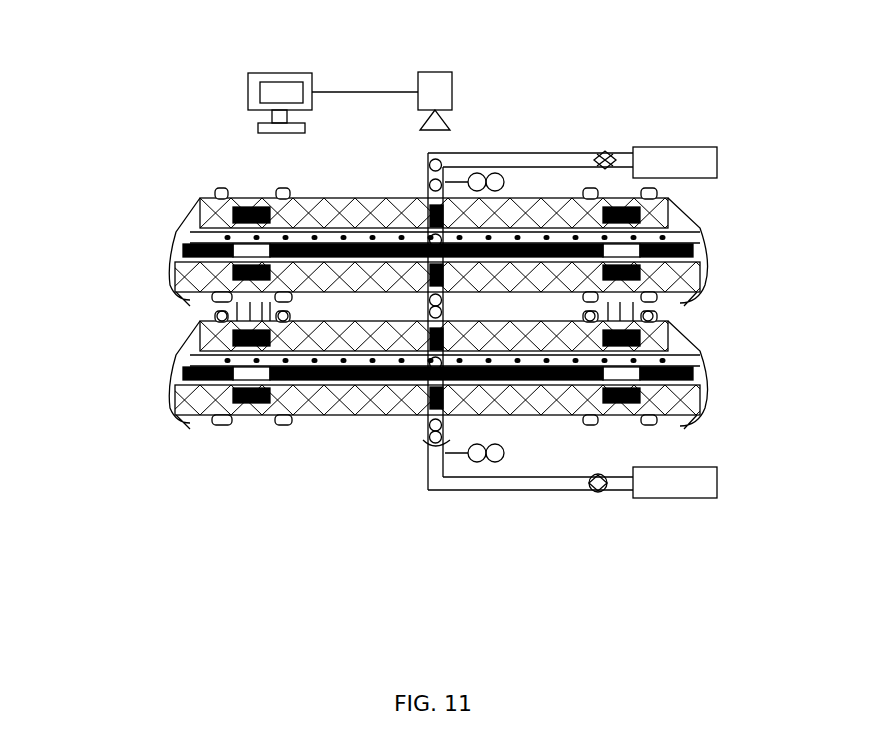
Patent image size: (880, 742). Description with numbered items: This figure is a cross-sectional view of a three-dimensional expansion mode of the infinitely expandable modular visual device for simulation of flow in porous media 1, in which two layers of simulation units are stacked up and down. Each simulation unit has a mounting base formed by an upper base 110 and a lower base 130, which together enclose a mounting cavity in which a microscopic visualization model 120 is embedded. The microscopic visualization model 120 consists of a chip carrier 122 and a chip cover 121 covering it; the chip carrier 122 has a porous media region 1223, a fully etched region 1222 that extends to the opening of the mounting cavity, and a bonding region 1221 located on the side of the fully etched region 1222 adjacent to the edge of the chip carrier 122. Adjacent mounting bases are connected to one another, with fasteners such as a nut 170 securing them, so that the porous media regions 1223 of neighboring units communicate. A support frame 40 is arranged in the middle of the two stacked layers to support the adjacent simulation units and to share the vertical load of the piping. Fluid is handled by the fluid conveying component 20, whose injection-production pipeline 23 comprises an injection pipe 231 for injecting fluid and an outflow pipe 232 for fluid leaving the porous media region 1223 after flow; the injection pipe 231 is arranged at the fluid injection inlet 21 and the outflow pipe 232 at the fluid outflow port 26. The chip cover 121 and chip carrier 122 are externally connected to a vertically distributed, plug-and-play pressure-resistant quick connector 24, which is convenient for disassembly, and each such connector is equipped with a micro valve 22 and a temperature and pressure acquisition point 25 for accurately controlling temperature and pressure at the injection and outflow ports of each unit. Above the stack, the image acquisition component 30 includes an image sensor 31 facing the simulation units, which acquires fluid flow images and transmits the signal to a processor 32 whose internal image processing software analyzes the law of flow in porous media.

The infinitely expandable modular visual device for simulation of flow in porous med 1 is at (328, 427).
The fluid conveying component 20 is at (786, 326).
The fluid injection inlet 21 is at (675, 492).
The micro valve 22 is at (595, 484).
The injection-production pipeline 23 is at (570, 565).
The injection pipe 231 is at (480, 487).
The outflow pipe 232 is at (577, 150).
The pressure-resistant quick connector 24 is at (407, 218).
The temperature and pressure acquisition point 25 is at (500, 190).
The fluid outflow port 26 is at (667, 162).
The image acquisition component 30 is at (503, 47).
The image sensor 31 is at (438, 100).
The processor 32 is at (287, 88).
The support frame 40 is at (670, 308).
The upper base 110 is at (352, 210).
The microscopic visualization model 120 is at (808, 197).
The chip cover 121 is at (660, 240).
The chip carrier 122 is at (667, 258).
The bonding region 1221 is at (240, 218).
The fully etched region 1222 is at (253, 248).
The porous media region 1223 is at (183, 252).
The lower base 130 is at (380, 293).
The nut 170 is at (197, 318).